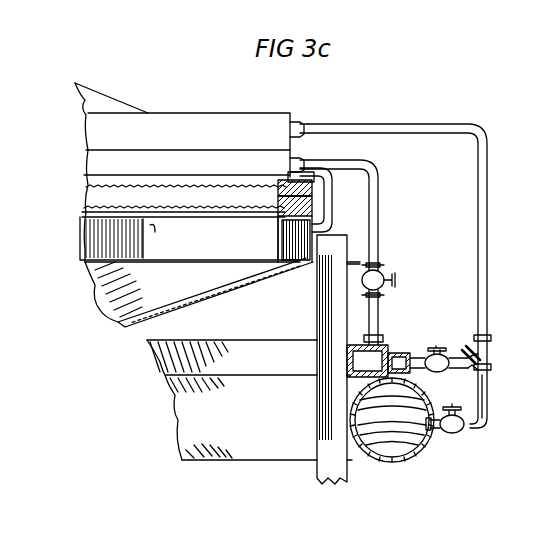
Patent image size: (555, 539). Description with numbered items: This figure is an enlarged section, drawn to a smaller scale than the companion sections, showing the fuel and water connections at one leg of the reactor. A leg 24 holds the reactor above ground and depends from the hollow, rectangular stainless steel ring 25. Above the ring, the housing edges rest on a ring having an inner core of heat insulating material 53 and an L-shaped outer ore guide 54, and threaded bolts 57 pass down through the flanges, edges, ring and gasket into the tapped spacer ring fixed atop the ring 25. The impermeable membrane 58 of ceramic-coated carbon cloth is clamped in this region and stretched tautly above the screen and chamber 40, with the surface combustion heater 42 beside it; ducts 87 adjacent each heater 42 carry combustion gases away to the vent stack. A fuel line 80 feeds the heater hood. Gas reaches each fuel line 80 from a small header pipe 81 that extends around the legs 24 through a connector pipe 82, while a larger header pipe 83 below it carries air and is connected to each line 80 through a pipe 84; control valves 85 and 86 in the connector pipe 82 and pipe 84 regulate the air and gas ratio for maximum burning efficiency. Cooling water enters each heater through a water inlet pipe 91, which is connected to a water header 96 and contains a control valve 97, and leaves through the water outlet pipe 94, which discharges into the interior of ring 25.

The duct 87 is at (100, 92).
The heater 42 is at (222, 143).
The impermeable membrane 58 is at (161, 188).
The inner core of heat insulating material 53 is at (277, 190).
The L-shaped outer ore guide 54 is at (278, 200).
The chamber 40 is at (231, 216).
The ring 25 is at (170, 250).
The threaded bolt 57 is at (316, 168).
The water outlet pipe 94 is at (338, 188).
The water inlet pipe 91 is at (380, 205).
The fuel line 80 is at (479, 206).
The control valve 97 is at (386, 266).
The water header 96 is at (386, 345).
The small header pipe 81 is at (408, 356).
The connector pipe 82 is at (470, 351).
The control valve 85 is at (434, 372).
The pipe 84 is at (490, 380).
The control valve 86 is at (454, 432).
The larger header pipe 83 is at (414, 459).
The leg 24 is at (336, 477).